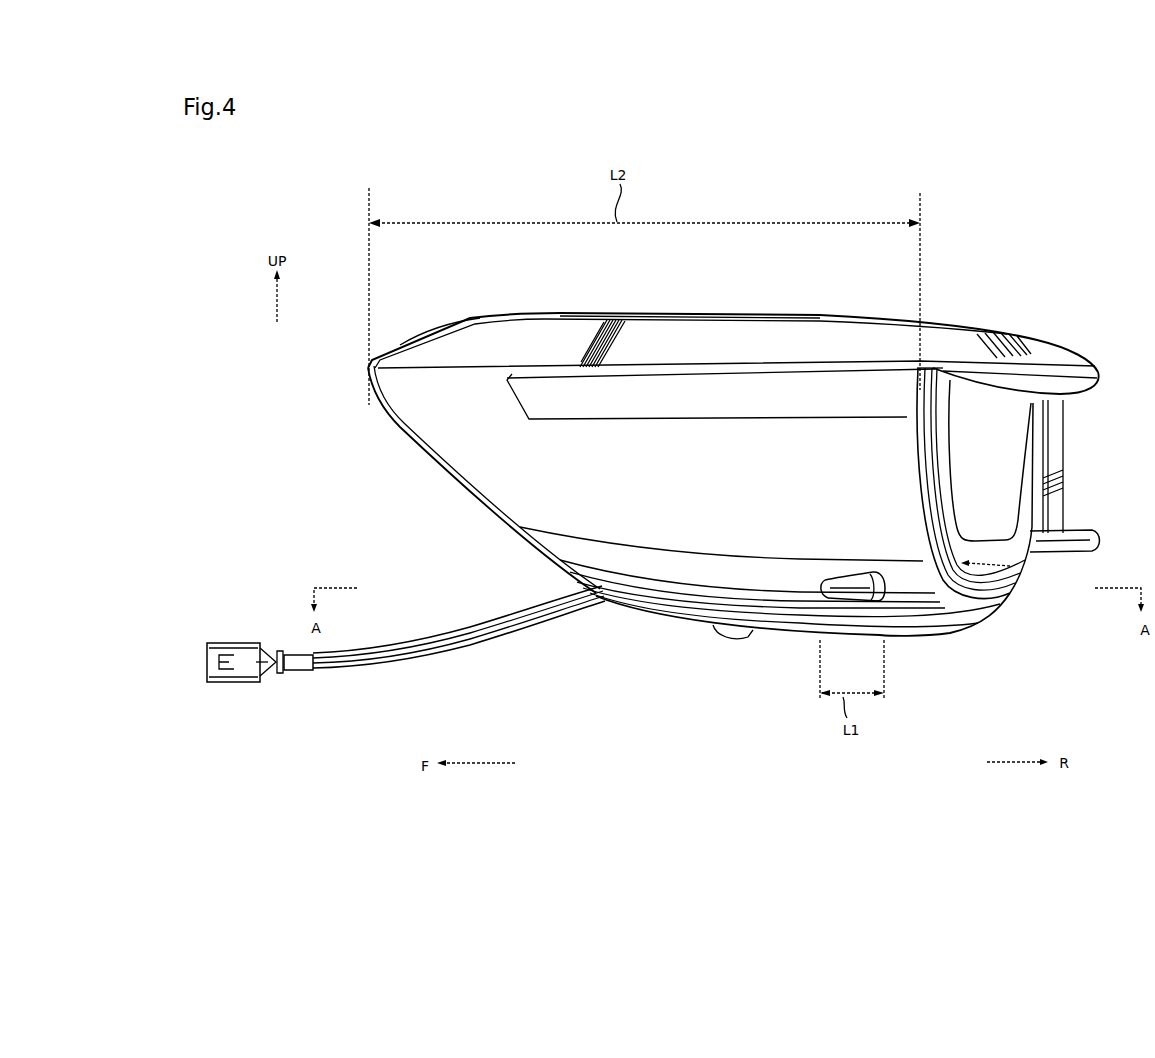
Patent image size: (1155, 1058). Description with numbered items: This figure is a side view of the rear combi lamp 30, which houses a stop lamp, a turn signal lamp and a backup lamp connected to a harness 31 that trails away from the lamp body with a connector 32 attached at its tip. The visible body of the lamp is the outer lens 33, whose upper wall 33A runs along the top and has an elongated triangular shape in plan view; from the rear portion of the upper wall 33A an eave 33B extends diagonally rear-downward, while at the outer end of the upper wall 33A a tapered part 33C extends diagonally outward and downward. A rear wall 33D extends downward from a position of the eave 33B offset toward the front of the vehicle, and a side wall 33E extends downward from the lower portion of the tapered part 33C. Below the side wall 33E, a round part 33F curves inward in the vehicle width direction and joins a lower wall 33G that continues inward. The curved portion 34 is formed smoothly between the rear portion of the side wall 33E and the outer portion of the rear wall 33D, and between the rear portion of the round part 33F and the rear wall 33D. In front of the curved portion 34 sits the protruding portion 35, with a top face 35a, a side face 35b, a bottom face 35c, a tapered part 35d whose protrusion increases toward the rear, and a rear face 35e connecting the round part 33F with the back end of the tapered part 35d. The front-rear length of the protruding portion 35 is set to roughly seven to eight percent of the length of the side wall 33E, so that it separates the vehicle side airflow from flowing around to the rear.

The rear combi lamp 30 is at (875, 286).
The harness 31 is at (463, 631).
The connector 32 is at (232, 643).
The outer lens 33 is at (572, 312).
The upper wall 33A is at (788, 313).
The eave 33B is at (1035, 347).
The tapered part 33C is at (504, 333).
The rear wall 33D is at (1003, 452).
The side wall 33E is at (617, 481).
The round part 33F is at (778, 622).
The lower wall 33G is at (990, 610).
The curved portion 34 is at (1010, 566).
The protruding portion 35 is at (848, 570).
The top face 35a is at (838, 577).
The side face 35b is at (846, 592).
The bottom face 35c is at (870, 607).
The tapered part 35d is at (815, 587).
The rear face 35e is at (882, 577).